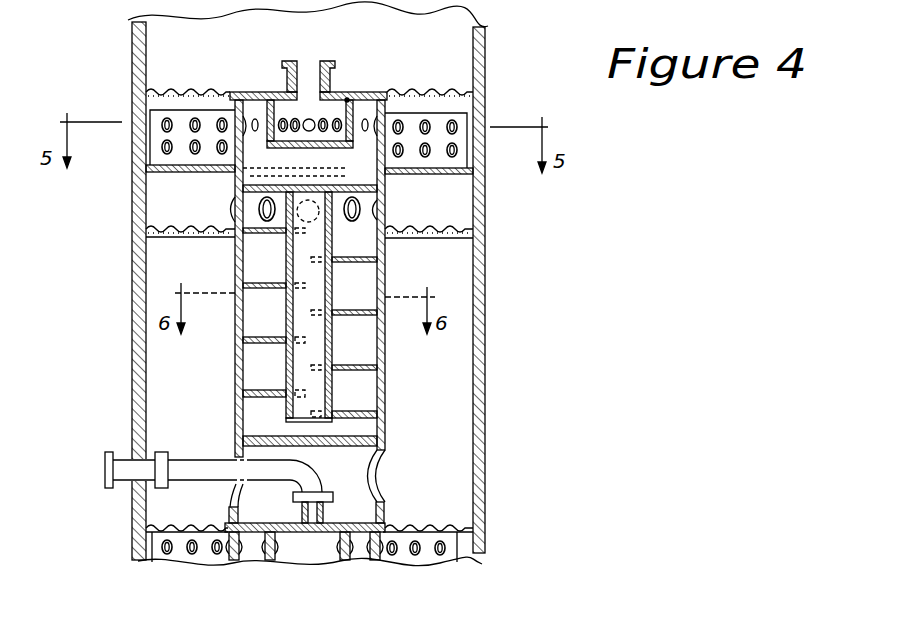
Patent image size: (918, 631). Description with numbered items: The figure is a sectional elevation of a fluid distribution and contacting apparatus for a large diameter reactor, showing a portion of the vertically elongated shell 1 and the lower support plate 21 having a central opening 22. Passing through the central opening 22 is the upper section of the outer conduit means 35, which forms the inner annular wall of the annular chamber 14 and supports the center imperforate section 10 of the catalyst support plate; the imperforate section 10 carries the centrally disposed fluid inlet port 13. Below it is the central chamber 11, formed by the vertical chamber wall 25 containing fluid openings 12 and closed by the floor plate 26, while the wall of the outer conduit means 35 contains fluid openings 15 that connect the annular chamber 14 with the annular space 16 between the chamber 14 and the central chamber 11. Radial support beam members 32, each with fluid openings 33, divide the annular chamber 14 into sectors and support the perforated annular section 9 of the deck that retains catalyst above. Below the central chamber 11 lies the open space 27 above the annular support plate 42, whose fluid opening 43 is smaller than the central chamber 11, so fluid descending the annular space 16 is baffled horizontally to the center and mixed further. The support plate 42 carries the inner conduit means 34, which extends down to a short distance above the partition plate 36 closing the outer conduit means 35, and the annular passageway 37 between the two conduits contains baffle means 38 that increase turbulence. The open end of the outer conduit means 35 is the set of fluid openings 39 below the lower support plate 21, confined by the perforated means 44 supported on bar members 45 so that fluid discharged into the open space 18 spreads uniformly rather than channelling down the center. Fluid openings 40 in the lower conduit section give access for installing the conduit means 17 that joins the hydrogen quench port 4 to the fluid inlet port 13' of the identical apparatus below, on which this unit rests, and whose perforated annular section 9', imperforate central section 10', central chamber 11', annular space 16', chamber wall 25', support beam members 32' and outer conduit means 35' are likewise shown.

The shell 1 is at (483, 350).
The hydrogen quench port 4 is at (105, 473).
The perforated annular section 9 is at (328, 73).
The lower liquid level 9' is at (308, 510).
The imperforate section 10 is at (297, 73).
The lower tray plate 10' is at (305, 510).
The central chamber 11 is at (298, 100).
The lower perforated block 11' is at (400, 562).
The fluid openings 12 is at (272, 116).
The fluid inlet port 13 is at (302, 58).
The lower pipe connection 13' is at (334, 507).
The annular chamber 14 is at (299, 127).
The fluid openings 15 is at (370, 122).
The annular space 16 is at (377, 89).
The lower stub tube 16' is at (265, 562).
The conduit means 17 is at (191, 458).
The open space 18 is at (442, 197).
The lower support plate 21 is at (170, 172).
The central opening 22 is at (235, 184).
The vertical chamber wall 25 is at (345, 86).
The lower stub tubes 25' is at (327, 568).
The chamber bottom wall or floor plate 26 is at (235, 207).
The open space 27 is at (321, 166).
The support beam members 32 is at (190, 93).
The lower left perforated block 32' is at (183, 571).
The fluid openings 33 is at (160, 102).
The inner conduit means 34 is at (306, 311).
The outer conduit means 35 is at (301, 291).
The lower wall stub 35' is at (217, 571).
The partition plate 36 is at (335, 446).
The annular passageway 37 is at (278, 320).
The baffle means 38 is at (254, 283).
The fluid openings 39 is at (380, 203).
The fluid openings 40 is at (375, 482).
The support plate 42 is at (363, 193).
The fluid opening 43 is at (312, 187).
The perforated means 44 is at (453, 230).
The supporting bar members 45 is at (177, 240).